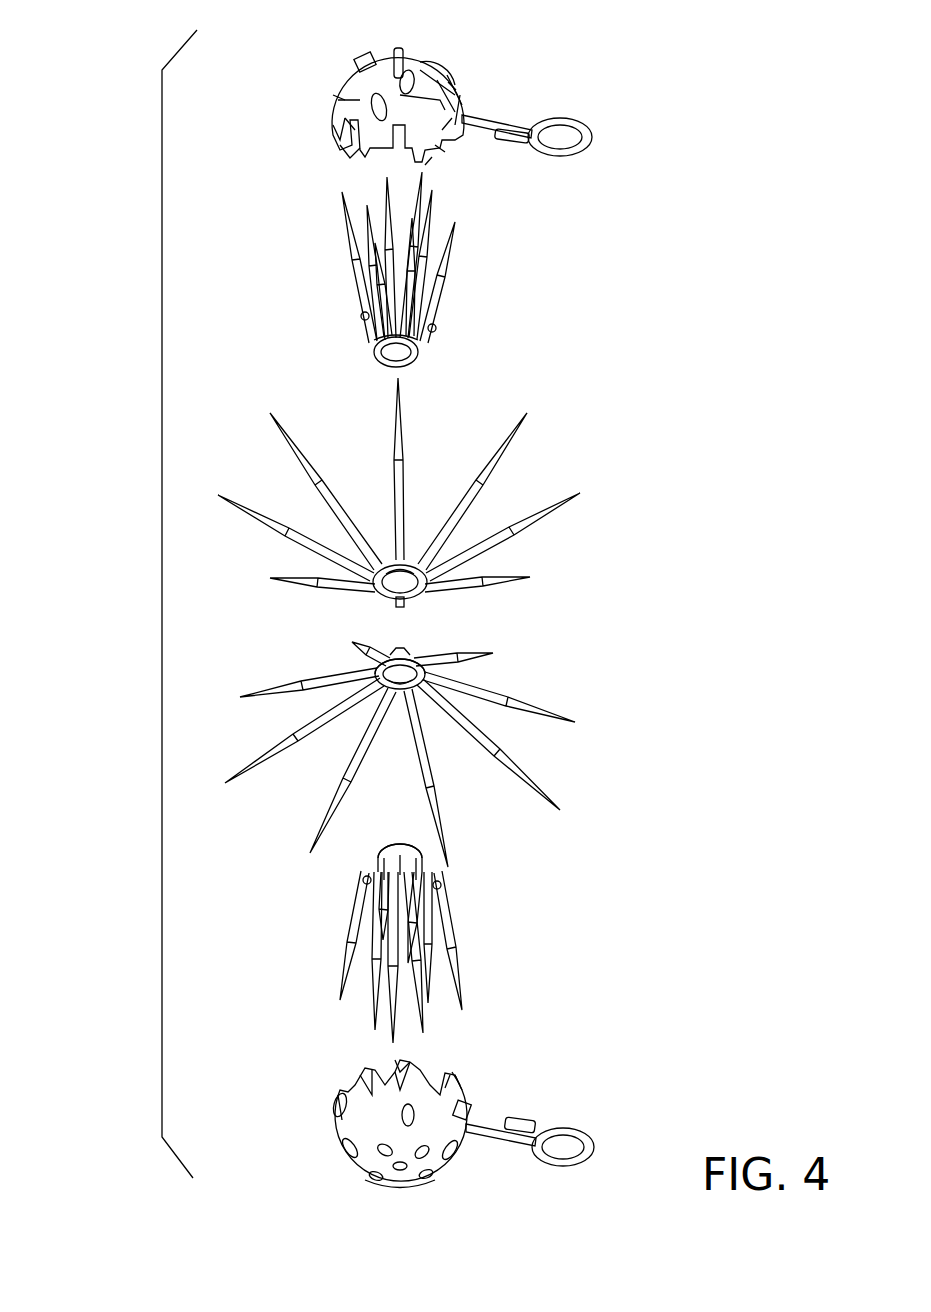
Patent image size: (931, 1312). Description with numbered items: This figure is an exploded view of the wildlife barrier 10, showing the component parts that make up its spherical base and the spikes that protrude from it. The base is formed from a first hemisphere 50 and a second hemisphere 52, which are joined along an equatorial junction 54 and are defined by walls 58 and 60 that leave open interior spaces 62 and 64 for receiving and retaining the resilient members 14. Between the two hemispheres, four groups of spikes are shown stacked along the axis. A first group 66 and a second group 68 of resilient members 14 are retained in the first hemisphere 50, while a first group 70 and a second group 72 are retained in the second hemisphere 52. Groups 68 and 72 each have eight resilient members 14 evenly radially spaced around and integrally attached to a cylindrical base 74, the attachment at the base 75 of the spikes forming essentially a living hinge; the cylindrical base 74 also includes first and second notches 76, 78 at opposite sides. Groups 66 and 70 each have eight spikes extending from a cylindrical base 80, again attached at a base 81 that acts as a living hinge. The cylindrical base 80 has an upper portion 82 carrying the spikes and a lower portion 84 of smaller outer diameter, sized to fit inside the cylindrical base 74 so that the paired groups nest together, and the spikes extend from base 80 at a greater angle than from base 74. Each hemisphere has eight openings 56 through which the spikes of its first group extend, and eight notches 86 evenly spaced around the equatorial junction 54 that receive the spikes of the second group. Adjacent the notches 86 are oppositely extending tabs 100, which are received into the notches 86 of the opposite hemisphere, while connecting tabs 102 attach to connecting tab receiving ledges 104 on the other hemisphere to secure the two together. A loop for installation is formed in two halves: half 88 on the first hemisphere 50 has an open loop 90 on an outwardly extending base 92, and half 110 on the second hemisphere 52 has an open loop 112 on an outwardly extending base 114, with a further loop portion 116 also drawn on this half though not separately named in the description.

The wildlife barrier 10 is at (112, 125).
The resilient members 14 is at (350, 237).
The first hemisphere 50 is at (523, 80).
The second hemisphere 52 is at (318, 1140).
The equatorial junction 54 is at (333, 118).
The openings 56 is at (420, 48).
The wall 58 is at (410, 1180).
The wall 60 is at (435, 60).
The interior space 62 is at (428, 1063).
The interior space 64 is at (345, 158).
The first group of resilient members 66 is at (404, 607).
The second group of resilient members 68 is at (474, 625).
The first group of resilient members 70 is at (465, 882).
The second group of resilient members 72 is at (512, 658).
The cylindrical base 74 is at (393, 600).
The base of resilient members 75 is at (385, 560).
The first notch 76 is at (410, 595).
The second notch 78 is at (415, 560).
The cylindrical base 80 is at (440, 326).
The base of resilient members 81 is at (374, 340).
The upper portion 82 is at (360, 318).
The lower portion 84 is at (392, 850).
The notches 86 is at (397, 48).
The loop half 88 is at (556, 595).
The open loop 90 is at (593, 137).
The outwardly extending base 92 is at (528, 125).
The tabs 100 is at (450, 85).
The connecting tabs 102 is at (440, 147).
The connecting tab receiving ledges 104 is at (357, 68).
The loop half 110 is at (591, 1145).
The open loop 112 is at (515, 145).
The outwardly extending base 114 is at (530, 1150).
The hanger ring 116 is at (595, 1150).